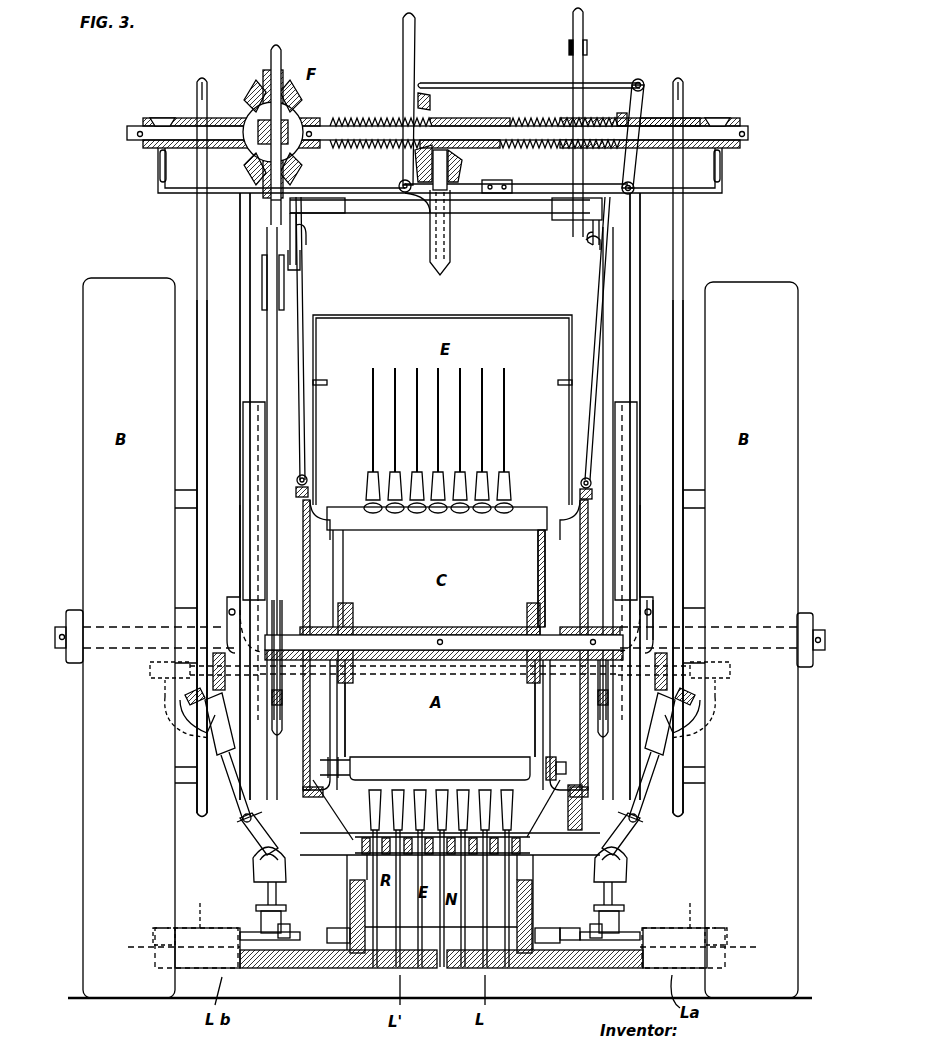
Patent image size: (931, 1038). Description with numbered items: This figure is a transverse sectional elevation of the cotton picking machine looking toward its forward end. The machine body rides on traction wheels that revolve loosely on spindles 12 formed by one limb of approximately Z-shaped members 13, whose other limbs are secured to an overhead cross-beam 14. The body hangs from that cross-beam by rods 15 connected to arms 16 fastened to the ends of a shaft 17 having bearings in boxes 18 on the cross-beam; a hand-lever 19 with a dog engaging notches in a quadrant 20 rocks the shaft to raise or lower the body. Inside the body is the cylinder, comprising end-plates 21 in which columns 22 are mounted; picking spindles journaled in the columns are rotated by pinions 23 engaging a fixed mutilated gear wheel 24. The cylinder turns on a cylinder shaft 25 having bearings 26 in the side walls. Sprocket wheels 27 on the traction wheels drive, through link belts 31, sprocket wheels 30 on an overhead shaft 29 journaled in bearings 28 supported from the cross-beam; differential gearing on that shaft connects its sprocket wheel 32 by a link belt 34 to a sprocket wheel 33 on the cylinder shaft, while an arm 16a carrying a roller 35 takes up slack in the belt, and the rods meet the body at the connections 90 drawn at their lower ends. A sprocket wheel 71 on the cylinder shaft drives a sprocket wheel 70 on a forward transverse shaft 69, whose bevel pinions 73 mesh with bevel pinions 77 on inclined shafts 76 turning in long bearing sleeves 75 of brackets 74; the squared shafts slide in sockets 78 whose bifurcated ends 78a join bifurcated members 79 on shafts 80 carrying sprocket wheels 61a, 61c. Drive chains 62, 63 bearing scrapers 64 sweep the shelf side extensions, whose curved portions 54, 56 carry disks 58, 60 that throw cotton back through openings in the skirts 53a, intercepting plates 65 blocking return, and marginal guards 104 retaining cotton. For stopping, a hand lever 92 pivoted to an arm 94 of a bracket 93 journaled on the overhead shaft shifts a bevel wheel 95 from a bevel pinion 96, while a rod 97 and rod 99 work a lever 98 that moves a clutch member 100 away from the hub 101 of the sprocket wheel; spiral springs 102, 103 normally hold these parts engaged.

The spindle 12 is at (55, 608).
The Z-shaped member 13 is at (240, 264).
The cross-beam 14 is at (156, 186).
The rod 15 is at (306, 300).
The arm 16 is at (306, 228).
The arm 16a is at (304, 266).
The shaft 17 is at (492, 215).
The box 18 is at (345, 212).
The hand-lever 19 is at (585, 34).
The quadrant 20 is at (585, 244).
The end-plate 21 is at (345, 574).
The column 22 is at (455, 520).
The pinion 23 is at (548, 782).
The mutilated gear wheel 24 is at (552, 720).
The cylinder shaft 25 is at (405, 625).
The bearing 26 is at (300, 620).
The sprocket wheel 27 is at (195, 536).
The bearing 28 is at (168, 116).
The shaft 29 is at (125, 131).
The sprocket wheel 30 is at (201, 76).
The link belt 31 is at (193, 266).
The sprocket wheel 32 is at (283, 50).
The sprocket wheel 33 is at (277, 735).
The link belt 34 is at (265, 346).
The roller 35 is at (260, 293).
The skirt 53a is at (348, 900).
The curved portion 54 is at (708, 948).
The curved portion 56 is at (172, 945).
The disk 58 is at (682, 909).
The disk 60 is at (196, 932).
The sprocket wheel 61a is at (604, 922).
The sprocket wheel 61c is at (288, 922).
The drive chain 62 is at (568, 925).
The drive chain 63 is at (245, 930).
The scraper 64 is at (441, 961).
The intercepting plate 65 is at (443, 936).
The transverse shaft 69 is at (150, 669).
The sprocket wheel 70 is at (603, 740).
The sprocket wheel 71 is at (615, 604).
The bevel pinion 73 is at (226, 684).
The bracket 74 is at (165, 712).
The bearing sleeve 75 is at (215, 748).
The inclined shaft 76 is at (240, 815).
The bevel pinion 77 is at (185, 691).
The socket 78 is at (252, 847).
The bifurcated end 78a is at (250, 867).
The bifurcated member 79 is at (266, 892).
The shaft 80 is at (262, 912).
The pivot 90 is at (310, 492).
The hand lever 92 is at (421, 99).
The bracket 93 is at (432, 240).
The arm 94 is at (402, 184).
The bevel wheel 95 is at (432, 100).
The bevel pinion 96 is at (462, 168).
The rod 97 is at (592, 184).
The lever 98 is at (644, 82).
The rod 99 is at (517, 82).
The clutch member 100 is at (611, 112).
The hub 101 is at (657, 116).
The spiral spring 102 is at (360, 117).
The spiral spring 103 is at (548, 118).
The marginal guard 104 is at (160, 926).